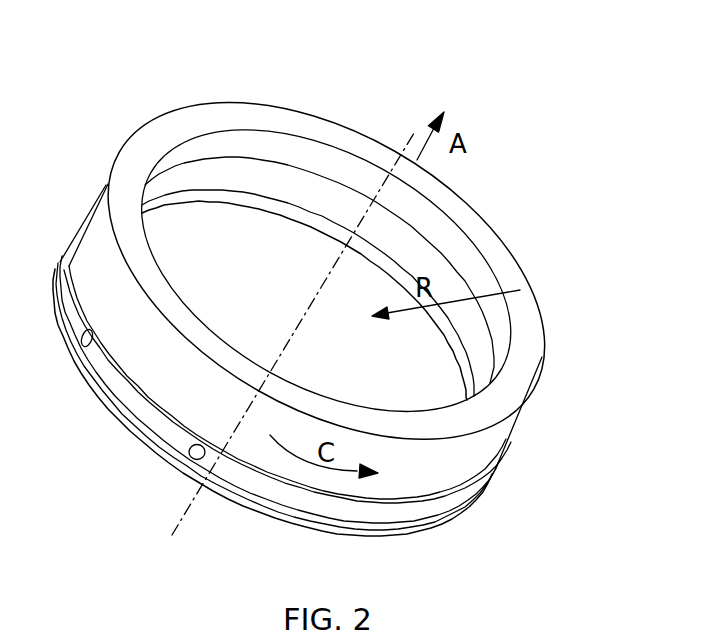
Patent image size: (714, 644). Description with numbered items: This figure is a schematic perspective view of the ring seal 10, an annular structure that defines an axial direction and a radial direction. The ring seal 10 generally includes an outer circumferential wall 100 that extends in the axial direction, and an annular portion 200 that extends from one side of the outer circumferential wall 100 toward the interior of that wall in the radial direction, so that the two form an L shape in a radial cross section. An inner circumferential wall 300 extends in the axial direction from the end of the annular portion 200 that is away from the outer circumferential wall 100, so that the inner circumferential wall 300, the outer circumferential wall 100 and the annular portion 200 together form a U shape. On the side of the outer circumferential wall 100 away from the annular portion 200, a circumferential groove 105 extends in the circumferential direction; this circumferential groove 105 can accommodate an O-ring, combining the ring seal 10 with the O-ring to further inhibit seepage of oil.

The ring seal 10 is at (334, 281).
The outer circumferential wall 100 is at (457, 462).
The circumferential groove 105 is at (152, 445).
The annular portion 200 is at (514, 349).
The inner circumferential wall 300 is at (333, 171).